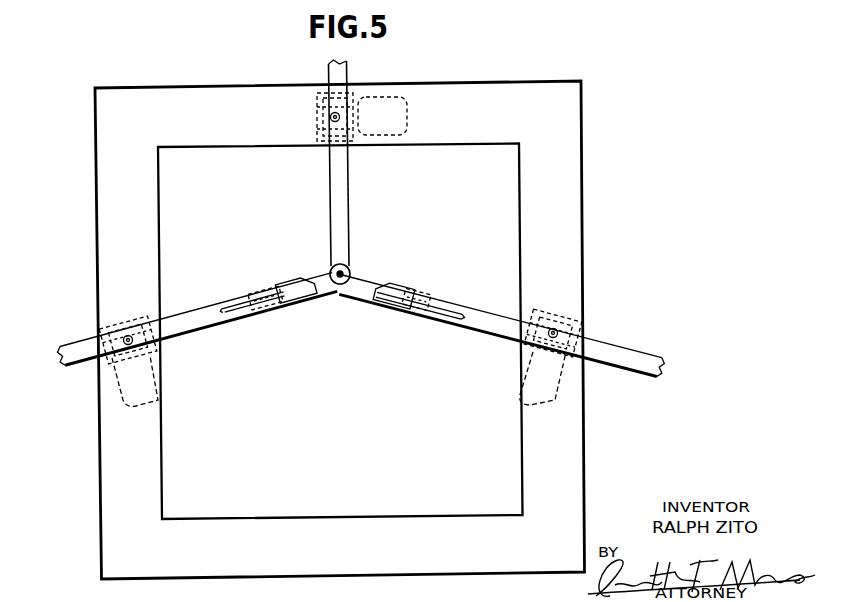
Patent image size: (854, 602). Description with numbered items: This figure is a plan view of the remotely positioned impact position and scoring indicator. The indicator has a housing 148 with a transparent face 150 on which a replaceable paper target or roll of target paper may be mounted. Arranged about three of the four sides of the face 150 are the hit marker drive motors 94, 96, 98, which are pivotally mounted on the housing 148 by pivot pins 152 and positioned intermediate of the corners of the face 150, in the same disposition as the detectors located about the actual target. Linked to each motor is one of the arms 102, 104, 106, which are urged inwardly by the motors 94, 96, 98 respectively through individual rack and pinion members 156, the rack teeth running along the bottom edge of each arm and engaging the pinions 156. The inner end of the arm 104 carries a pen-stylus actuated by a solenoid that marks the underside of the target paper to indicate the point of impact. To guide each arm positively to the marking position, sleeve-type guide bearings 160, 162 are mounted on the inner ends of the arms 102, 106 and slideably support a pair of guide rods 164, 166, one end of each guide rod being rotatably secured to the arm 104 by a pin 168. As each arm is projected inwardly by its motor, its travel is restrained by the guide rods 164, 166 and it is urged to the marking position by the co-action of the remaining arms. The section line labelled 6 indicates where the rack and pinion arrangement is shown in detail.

The section line 6- 6 is at (638, 302).
The hit marker drive motor 94 is at (163, 405).
The hit marker drive motor 96 is at (396, 94).
The hit marker drive motor 98 is at (530, 410).
The arm 102 is at (187, 314).
The arm 104 is at (348, 210).
The arm 106 is at (490, 313).
The housing 148 is at (562, 168).
The transparent face 150 is at (497, 218).
The pivot pin 152 is at (329, 141).
The rack and pinion member 156 is at (342, 96).
The sleeve-type guide bearing 160 is at (258, 291).
The sleeve-type guide bearing 162 is at (424, 291).
The guide rod 164 is at (320, 286).
The guide rod 166 is at (370, 284).
The pin 168 is at (343, 272).